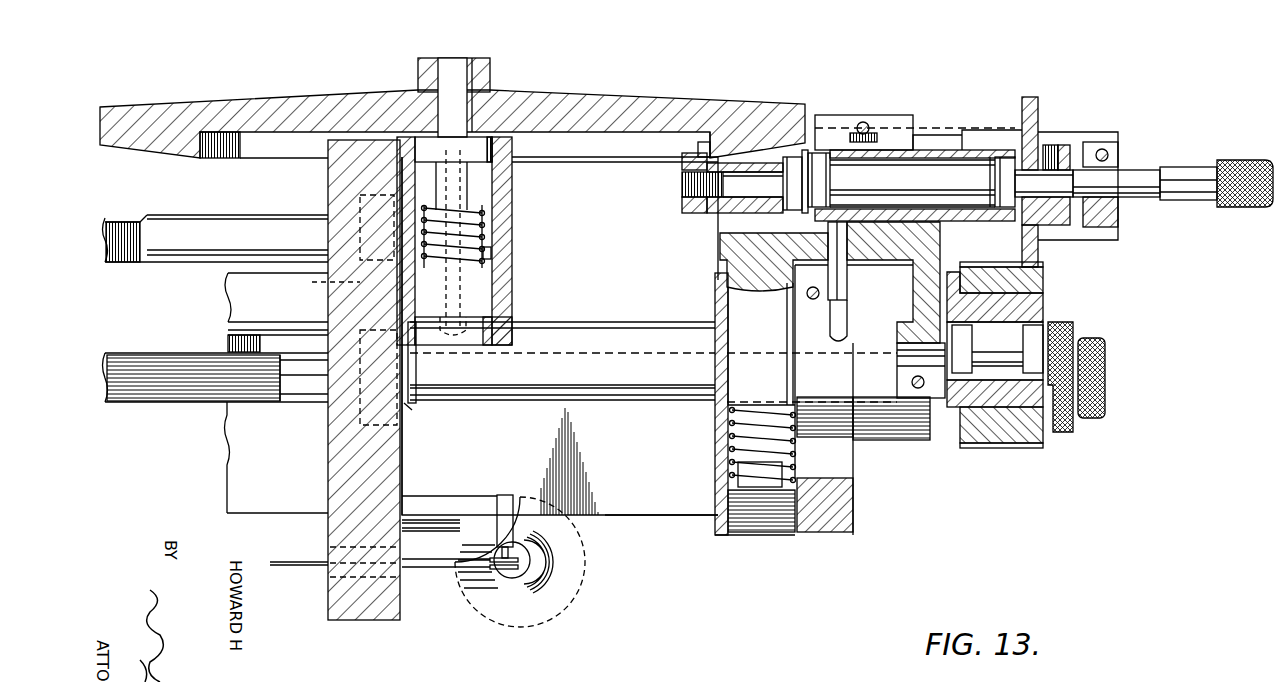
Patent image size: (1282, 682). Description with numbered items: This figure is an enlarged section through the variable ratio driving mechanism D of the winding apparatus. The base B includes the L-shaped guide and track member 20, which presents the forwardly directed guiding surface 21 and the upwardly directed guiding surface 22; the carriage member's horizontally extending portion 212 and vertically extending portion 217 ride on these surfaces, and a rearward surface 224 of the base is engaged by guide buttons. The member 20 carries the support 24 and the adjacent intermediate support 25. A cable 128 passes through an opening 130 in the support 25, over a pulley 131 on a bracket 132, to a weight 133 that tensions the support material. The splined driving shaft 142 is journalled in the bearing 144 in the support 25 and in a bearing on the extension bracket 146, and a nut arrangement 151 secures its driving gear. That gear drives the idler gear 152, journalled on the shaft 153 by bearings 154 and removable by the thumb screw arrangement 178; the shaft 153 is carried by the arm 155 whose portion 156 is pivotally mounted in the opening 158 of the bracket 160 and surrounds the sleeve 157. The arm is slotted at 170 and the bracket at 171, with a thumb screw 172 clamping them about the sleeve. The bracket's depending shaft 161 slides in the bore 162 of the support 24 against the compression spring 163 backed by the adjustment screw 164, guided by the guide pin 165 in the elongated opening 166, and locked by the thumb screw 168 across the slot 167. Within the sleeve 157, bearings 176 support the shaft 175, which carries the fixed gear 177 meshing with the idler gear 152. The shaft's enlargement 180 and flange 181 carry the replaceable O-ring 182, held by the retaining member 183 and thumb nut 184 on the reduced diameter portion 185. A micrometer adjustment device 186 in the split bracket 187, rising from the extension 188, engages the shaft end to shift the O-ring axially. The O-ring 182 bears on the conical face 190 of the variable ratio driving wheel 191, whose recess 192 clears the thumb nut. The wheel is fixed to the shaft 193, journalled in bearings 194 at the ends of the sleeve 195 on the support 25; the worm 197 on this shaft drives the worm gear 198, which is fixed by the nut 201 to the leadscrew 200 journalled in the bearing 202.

The guide and track member 20 is at (645, 524).
The forwardly directed guiding surface 21 is at (255, 514).
The upwardly directed guiding surface 22 is at (575, 295).
The support 24 is at (828, 532).
The intermediate support 25 is at (400, 453).
The cable 128 is at (302, 562).
The opening 130 is at (398, 577).
The pulley 131 is at (502, 572).
The bracket 132 is at (423, 497).
The weight 133 is at (560, 598).
The splined driving shaft 142 is at (142, 402).
The bearing 144 is at (407, 407).
The extension bracket 146 is at (920, 440).
The nut arrangement 151 is at (1106, 400).
The idler gear 152 is at (1046, 286).
The shaft 153 is at (1002, 368).
The bearings 154 is at (1023, 353).
The arm 155 is at (920, 284).
The longitudinally extending portion 156 is at (886, 210).
The sleeve 157 is at (935, 162).
The opening 158 is at (856, 210).
The bracket 160 is at (777, 243).
The shaft 161 is at (810, 344).
The bore 162 is at (730, 376).
The compression spring 163 is at (728, 430).
The adjustment screw 164 is at (745, 524).
The guide pin 165 is at (850, 272).
The elongated opening 166 is at (843, 305).
The slot 167 is at (840, 470).
The thumb screw 168 is at (813, 300).
The slot 170 is at (928, 140).
The slot 171 is at (905, 117).
The thumb screw 172 is at (865, 122).
The shaft 175 is at (980, 172).
The bearings 176 is at (818, 160).
The gear 177 is at (1040, 112).
The thumb screw arrangement 178 is at (1068, 324).
The enlargement 180 is at (786, 183).
The flange 181 is at (800, 156).
The O-ring 182 is at (797, 150).
The retaining member 183 is at (747, 205).
The thumb nut 184 is at (684, 205).
The reduced diameter portion 185 is at (690, 180).
The micrometer adjustment device 186 is at (1140, 177).
The split bracket 187 is at (1120, 217).
The extension 188 is at (1082, 137).
The conical face 190 is at (724, 155).
The variable ratio driving wheel 191 is at (555, 90).
The recess 192 is at (698, 142).
The shaft 193 is at (450, 64).
The bearings 194 is at (512, 146).
The sleeve 195 is at (512, 190).
The worm 197 is at (500, 240).
The worm gear 198 is at (455, 345).
The leadscrew 200 is at (249, 222).
The nut 201 is at (500, 263).
The bearing 202 is at (328, 283).
The horizontally extending portion 212 is at (228, 470).
The vertically extending portion 217 is at (698, 283).
The rearward surface 224 is at (243, 273).
The base B is at (603, 522).
The variable ratio driving mechanism D is at (856, 98).